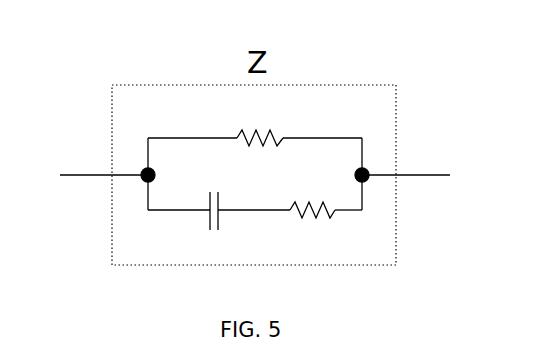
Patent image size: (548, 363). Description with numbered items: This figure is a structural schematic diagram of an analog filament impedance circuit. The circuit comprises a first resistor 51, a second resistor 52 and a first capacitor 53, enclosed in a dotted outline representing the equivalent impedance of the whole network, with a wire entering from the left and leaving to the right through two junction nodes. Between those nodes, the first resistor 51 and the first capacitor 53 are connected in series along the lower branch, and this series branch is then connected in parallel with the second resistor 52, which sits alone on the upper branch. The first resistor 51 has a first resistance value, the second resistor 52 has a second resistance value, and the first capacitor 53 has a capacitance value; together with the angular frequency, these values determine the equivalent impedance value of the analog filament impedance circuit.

The first resistor 51 is at (333, 216).
The second resistor 52 is at (281, 137).
The first capacitor 53 is at (208, 219).